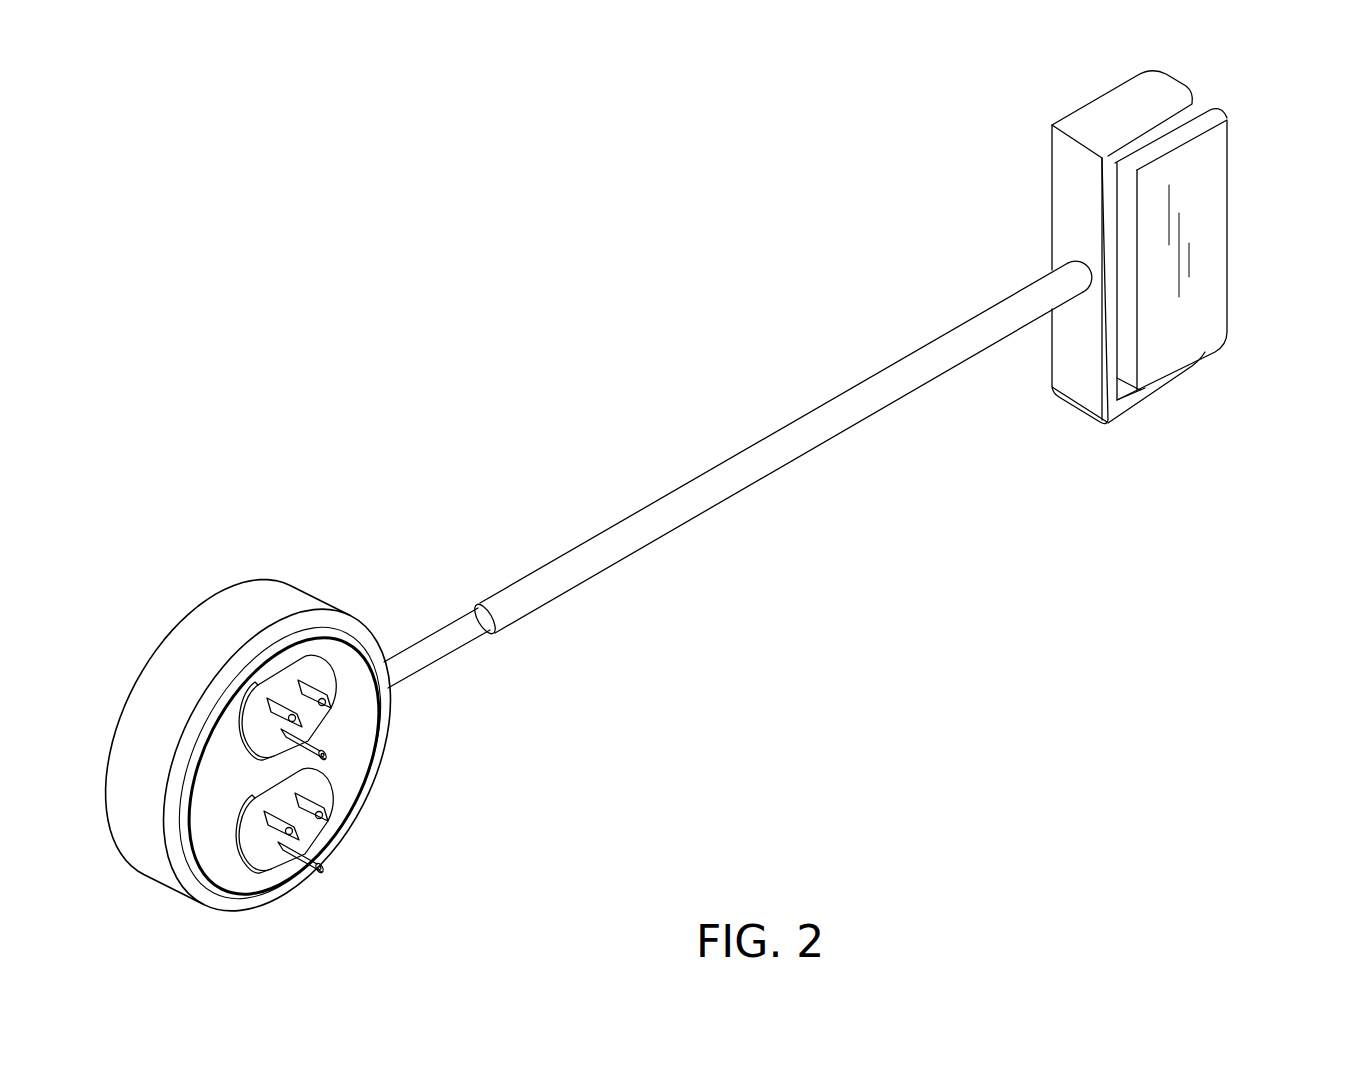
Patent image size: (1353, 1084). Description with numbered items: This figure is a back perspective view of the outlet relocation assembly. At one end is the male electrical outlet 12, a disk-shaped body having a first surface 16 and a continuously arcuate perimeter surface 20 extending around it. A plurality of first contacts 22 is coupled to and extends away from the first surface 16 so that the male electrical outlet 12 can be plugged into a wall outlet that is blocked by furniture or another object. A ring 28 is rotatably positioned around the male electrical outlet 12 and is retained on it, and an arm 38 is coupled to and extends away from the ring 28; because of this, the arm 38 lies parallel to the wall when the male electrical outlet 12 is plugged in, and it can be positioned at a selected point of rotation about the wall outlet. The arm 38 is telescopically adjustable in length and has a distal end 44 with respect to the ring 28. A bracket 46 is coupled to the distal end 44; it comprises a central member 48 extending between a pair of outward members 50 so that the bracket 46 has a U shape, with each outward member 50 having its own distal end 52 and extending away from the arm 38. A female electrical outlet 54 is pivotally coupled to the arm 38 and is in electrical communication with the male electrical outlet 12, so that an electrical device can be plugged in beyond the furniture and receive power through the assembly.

The male electrical outlet 12 is at (195, 537).
The first surface 16 is at (352, 726).
The perimeter surface 20 is at (233, 895).
The first contacts 22 is at (281, 706).
The ring 28 is at (151, 658).
The arm 38 is at (722, 460).
The distal end 44 is at (1086, 262).
The bracket 46 is at (1052, 128).
The central member 48 is at (1075, 370).
The outward members 50 is at (1132, 102).
The distal end 52 is at (1172, 92).
The female electrical outlet 54 is at (1267, 182).